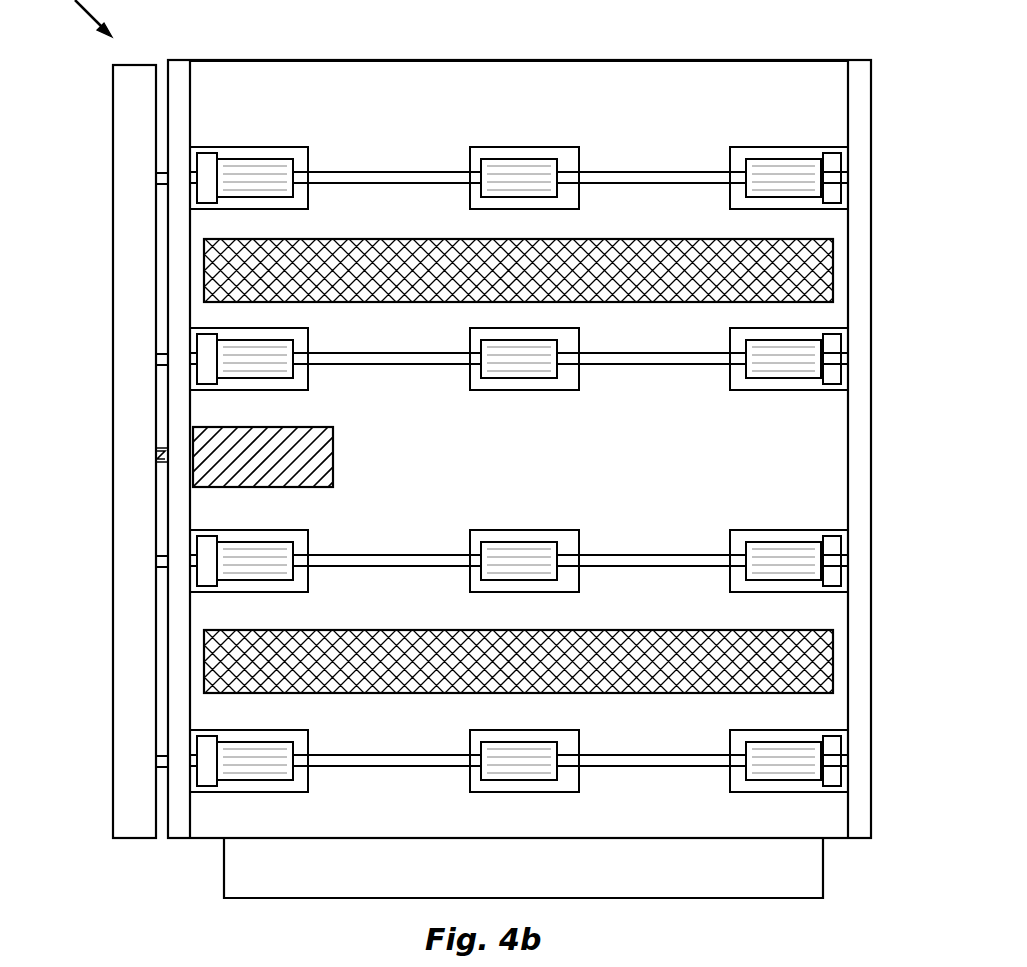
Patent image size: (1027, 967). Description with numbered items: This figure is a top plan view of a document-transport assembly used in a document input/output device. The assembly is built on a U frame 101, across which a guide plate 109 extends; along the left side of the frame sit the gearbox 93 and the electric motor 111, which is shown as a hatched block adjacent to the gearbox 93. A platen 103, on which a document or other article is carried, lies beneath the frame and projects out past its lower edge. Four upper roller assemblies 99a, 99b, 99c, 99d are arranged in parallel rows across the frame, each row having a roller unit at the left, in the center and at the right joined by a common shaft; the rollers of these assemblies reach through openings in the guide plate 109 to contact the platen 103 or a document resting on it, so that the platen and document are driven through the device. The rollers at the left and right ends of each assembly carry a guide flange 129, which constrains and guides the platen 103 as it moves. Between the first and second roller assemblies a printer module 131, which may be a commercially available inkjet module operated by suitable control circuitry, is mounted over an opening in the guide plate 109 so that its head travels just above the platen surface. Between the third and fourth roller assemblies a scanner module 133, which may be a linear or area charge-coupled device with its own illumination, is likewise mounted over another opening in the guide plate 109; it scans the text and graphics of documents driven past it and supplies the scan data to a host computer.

The gearbox 93 is at (128, 168).
The upper roller assembly 99a is at (521, 175).
The upper roller assembly 99b is at (512, 360).
The upper roller assembly 99c is at (459, 536).
The upper roller assembly 99d is at (527, 762).
The U frame 101 is at (860, 476).
The platen 103 is at (232, 890).
The guide plate 109 is at (777, 83).
The electric motor 111 is at (197, 440).
The guide flange 129 is at (207, 575).
The printer module 131 is at (713, 247).
The scanner module 133 is at (698, 640).